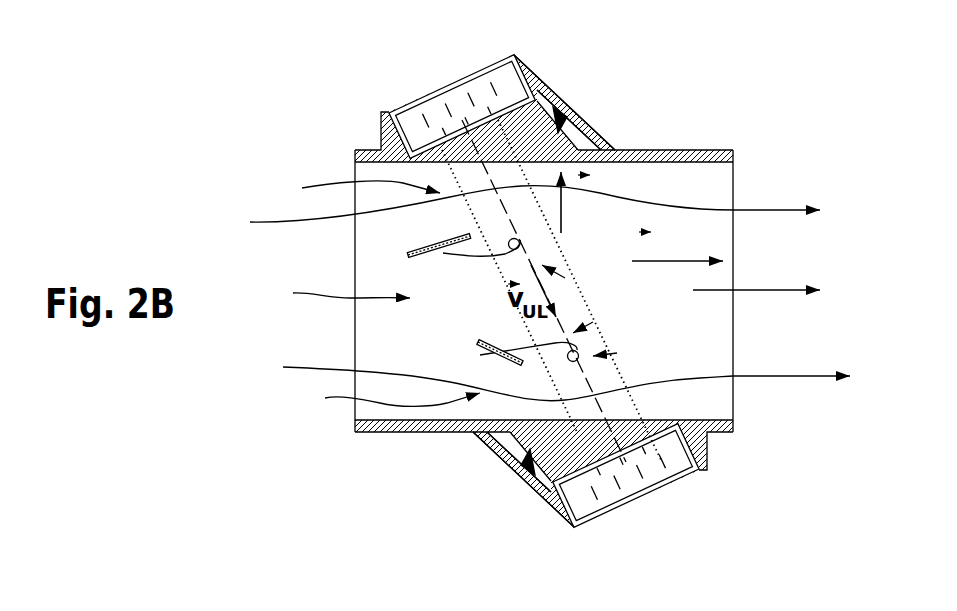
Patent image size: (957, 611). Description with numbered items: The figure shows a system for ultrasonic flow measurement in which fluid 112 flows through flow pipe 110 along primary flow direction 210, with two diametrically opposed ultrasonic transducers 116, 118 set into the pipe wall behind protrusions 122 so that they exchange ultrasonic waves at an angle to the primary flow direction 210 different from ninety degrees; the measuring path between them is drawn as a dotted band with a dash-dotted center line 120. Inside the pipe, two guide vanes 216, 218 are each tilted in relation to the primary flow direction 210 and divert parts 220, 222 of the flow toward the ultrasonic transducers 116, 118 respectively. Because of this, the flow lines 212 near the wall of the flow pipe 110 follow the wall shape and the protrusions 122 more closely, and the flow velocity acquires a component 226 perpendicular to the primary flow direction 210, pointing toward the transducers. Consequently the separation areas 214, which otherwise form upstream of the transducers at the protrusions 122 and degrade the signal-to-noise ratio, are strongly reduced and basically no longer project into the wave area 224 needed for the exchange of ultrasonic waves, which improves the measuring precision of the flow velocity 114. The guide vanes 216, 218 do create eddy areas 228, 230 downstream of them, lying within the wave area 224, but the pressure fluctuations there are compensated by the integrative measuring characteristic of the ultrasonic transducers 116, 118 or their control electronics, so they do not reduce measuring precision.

The flow pipe 110 is at (700, 150).
The fluid 112 is at (326, 294).
The flow velocity 114 is at (687, 260).
The ultrasonic transducer 116 is at (470, 108).
The ultrasonic transducer 118 is at (645, 470).
The ultrasonic measuring path 120 is at (540, 265).
The protrusion 122 is at (572, 152).
The primary flow direction 210 is at (765, 290).
The flow lines 212 is at (769, 208).
The separation area 214 is at (562, 124).
The guide vane 216 is at (410, 242).
The guide vane 218 is at (477, 350).
The part of the flow 220 is at (347, 189).
The part of the flow 222 is at (377, 403).
The wave area 224 is at (617, 353).
The flow velocity component perpendicular to the primary flow direction 226 is at (561, 218).
The eddy area 228 is at (565, 278).
The eddy area 230 is at (593, 322).